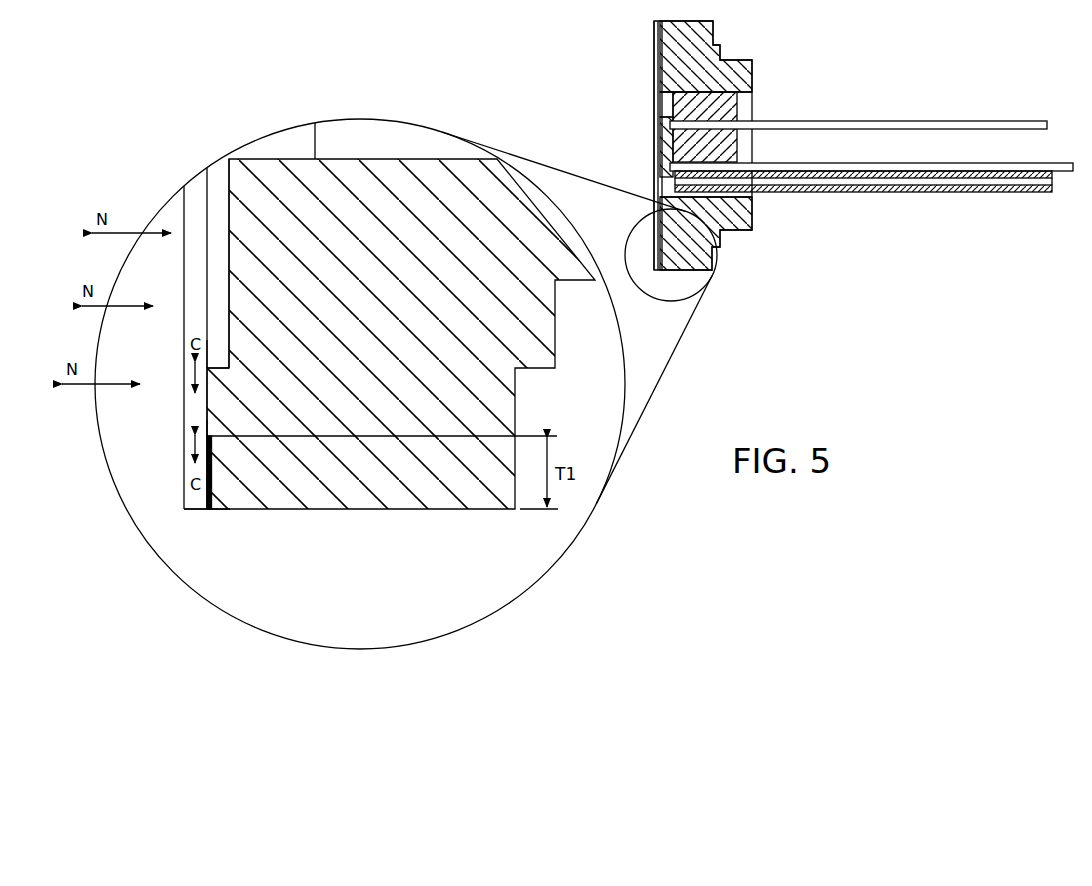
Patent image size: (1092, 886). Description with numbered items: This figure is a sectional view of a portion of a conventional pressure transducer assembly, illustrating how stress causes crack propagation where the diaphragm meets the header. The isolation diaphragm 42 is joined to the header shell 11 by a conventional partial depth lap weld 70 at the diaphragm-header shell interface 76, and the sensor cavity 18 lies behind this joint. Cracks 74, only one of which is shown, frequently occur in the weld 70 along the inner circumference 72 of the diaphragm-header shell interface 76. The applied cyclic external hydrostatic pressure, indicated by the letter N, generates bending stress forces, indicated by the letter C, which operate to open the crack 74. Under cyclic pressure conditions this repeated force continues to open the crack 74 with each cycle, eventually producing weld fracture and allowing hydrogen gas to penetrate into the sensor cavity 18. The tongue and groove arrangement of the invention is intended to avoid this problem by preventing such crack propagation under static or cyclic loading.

The header shell 11 is at (332, 510).
The sensor cavity 18 is at (220, 262).
The isolation diaphragm 42 is at (184, 340).
The weld 70 is at (213, 493).
The inner circumference 72 is at (222, 368).
The crack 74 is at (207, 422).
The diaphragm-header shell interface 76 is at (211, 518).